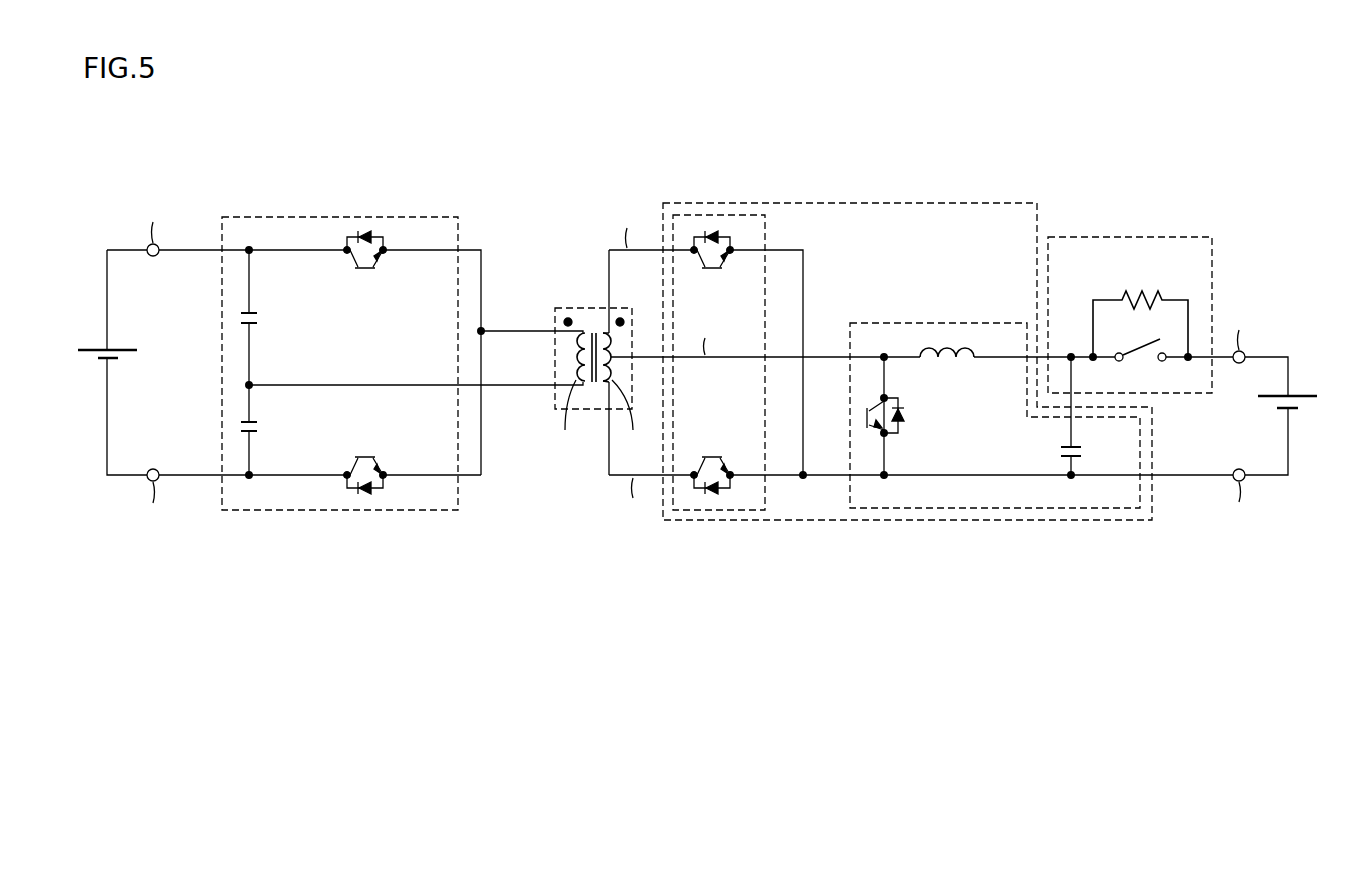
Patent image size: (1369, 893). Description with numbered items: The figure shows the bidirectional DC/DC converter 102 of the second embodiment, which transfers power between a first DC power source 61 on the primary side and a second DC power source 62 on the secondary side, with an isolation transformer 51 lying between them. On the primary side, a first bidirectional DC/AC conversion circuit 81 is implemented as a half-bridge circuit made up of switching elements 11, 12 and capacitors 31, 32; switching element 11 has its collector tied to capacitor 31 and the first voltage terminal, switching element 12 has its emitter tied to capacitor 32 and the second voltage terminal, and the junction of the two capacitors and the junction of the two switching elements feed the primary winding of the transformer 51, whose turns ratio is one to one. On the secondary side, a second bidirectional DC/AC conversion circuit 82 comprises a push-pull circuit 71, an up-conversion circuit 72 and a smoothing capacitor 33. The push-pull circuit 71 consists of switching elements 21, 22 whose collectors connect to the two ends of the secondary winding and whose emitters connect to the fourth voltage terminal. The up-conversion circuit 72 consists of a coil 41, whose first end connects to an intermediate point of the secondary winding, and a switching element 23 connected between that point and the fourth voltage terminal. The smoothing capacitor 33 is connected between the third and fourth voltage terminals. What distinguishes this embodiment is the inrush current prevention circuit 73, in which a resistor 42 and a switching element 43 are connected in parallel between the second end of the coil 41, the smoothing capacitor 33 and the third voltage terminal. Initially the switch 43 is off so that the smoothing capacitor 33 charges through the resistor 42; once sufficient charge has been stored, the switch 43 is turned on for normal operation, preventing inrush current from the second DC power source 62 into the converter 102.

The bidirectional DC/DC converter 102 is at (1295, 128).
The first DC power source 61 is at (98, 349).
The second DC power source 62 is at (1306, 396).
The first bidirectional DC/AC conversion circuit 81 is at (432, 215).
The second bidirectional DC/AC conversion circuit 82 is at (985, 202).
The capacitor 31 is at (256, 312).
The capacitor 32 is at (256, 421).
The smoothing capacitor 33 is at (1081, 446).
The switching element 11 is at (381, 264).
The switching element 12 is at (380, 462).
The switching element 21 is at (728, 262).
The switching element 22 is at (727, 466).
The switching element 23 is at (904, 433).
The isolation transformer 51 is at (573, 306).
The push-pull circuit 71 is at (767, 224).
The up-conversion circuit 72 is at (930, 321).
The inrush current prevention circuit 73 is at (1178, 235).
The coil 41 is at (949, 366).
The resistor 42 is at (1146, 293).
The switching element 43 is at (1142, 360).